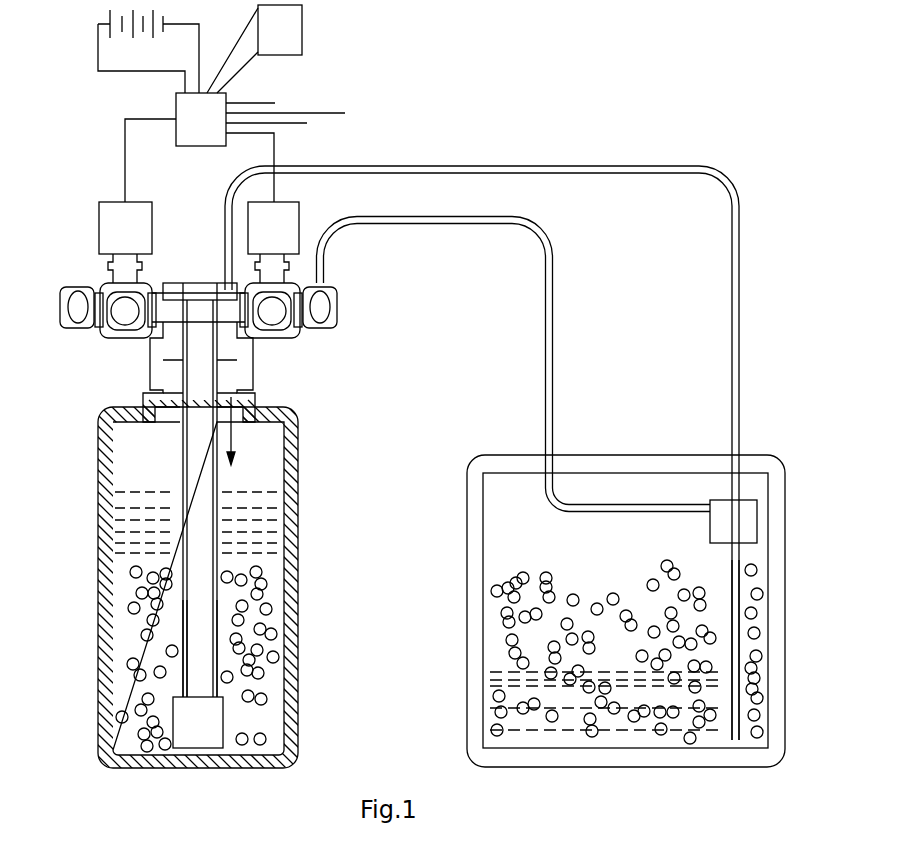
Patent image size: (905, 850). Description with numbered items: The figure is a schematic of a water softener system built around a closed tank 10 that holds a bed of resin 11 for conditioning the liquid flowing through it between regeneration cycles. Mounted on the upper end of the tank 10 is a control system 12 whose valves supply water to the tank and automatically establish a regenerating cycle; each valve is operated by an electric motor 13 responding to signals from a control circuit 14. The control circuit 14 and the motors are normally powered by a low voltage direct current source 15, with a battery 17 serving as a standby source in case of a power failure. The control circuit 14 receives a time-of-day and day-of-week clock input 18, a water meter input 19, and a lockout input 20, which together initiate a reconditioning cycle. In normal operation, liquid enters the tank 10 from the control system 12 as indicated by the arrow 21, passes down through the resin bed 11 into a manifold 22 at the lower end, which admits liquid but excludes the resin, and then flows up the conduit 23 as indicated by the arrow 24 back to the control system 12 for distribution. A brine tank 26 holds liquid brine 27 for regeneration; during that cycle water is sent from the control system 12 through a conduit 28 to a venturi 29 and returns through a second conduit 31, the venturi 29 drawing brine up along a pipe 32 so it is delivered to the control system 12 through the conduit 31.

The tank 10 is at (290, 583).
The resin bed 11 is at (130, 530).
The control system 12 is at (312, 345).
The electric motor 13 is at (137, 244).
The control circuit 14 is at (214, 132).
The low voltage direct current source 15 is at (294, 42).
The battery 17 is at (113, 6).
The clock input 18 is at (269, 103).
The water meter input 19 is at (303, 113).
The lockout input 20 is at (284, 136).
The arrow 21 is at (232, 432).
The manifold 22 is at (205, 725).
The conduit 23 is at (212, 678).
The arrow 24 is at (197, 660).
The brine tank 26 is at (467, 570).
The brine 27 is at (603, 730).
The conduit 28 is at (405, 222).
The venturi 29 is at (747, 518).
The second conduit 31 is at (507, 165).
The pipe 32 is at (733, 645).